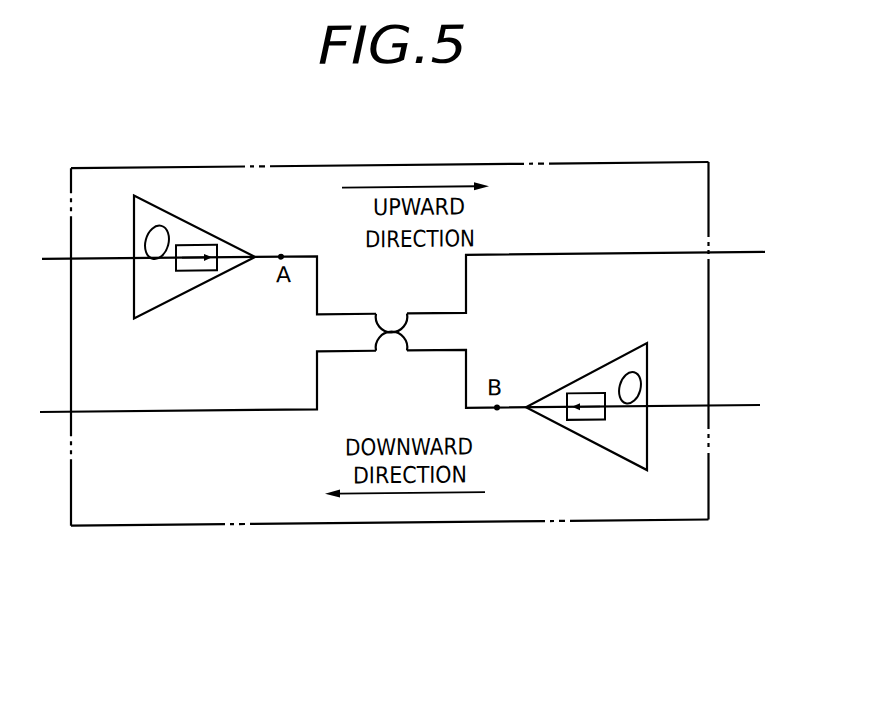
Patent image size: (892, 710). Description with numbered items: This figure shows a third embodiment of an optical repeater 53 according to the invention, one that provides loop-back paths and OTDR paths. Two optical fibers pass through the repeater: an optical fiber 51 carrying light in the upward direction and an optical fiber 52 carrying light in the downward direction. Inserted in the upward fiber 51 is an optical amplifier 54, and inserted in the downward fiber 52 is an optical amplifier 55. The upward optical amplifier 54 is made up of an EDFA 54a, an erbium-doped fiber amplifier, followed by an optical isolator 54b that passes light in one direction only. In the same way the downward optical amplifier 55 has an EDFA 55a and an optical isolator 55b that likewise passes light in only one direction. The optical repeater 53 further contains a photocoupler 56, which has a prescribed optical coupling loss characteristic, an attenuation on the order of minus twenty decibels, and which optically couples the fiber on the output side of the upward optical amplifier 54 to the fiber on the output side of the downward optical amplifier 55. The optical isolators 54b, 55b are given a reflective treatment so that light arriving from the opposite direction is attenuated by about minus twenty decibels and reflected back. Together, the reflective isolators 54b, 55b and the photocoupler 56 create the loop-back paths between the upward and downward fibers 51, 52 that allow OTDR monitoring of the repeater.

The optical fiber in the upward direction 51 is at (58, 256).
The optical fiber in the downward direction 52 is at (57, 412).
The optical repeater 53 is at (163, 163).
The optical amplifier in the upward direction 54 is at (167, 282).
The EDFA 54a is at (147, 238).
The optical isolator 54b is at (207, 245).
The optical amplifier in the downward direction 55 is at (617, 360).
The EDFA 55a is at (635, 390).
The optical isolator 55b is at (582, 424).
The photocoupler 56 is at (390, 347).